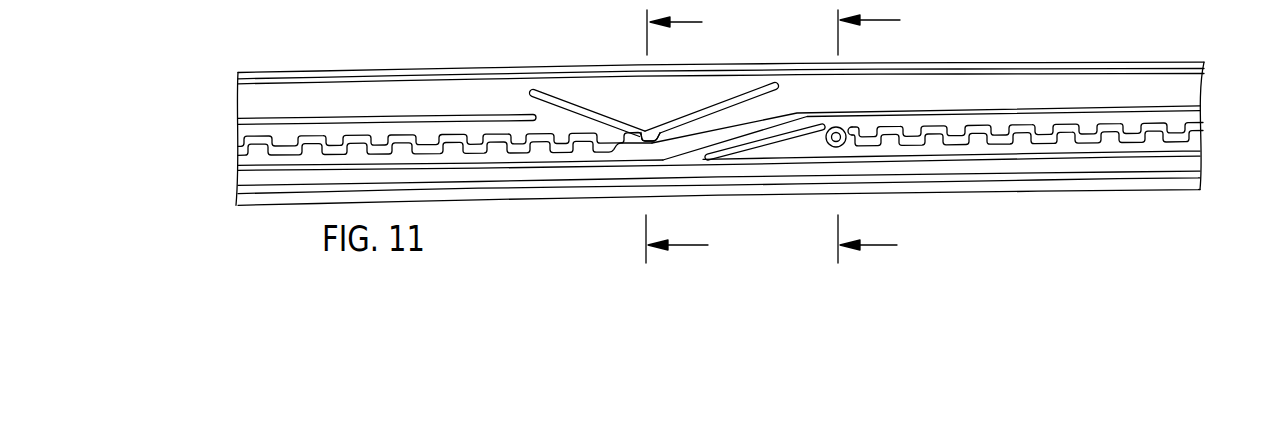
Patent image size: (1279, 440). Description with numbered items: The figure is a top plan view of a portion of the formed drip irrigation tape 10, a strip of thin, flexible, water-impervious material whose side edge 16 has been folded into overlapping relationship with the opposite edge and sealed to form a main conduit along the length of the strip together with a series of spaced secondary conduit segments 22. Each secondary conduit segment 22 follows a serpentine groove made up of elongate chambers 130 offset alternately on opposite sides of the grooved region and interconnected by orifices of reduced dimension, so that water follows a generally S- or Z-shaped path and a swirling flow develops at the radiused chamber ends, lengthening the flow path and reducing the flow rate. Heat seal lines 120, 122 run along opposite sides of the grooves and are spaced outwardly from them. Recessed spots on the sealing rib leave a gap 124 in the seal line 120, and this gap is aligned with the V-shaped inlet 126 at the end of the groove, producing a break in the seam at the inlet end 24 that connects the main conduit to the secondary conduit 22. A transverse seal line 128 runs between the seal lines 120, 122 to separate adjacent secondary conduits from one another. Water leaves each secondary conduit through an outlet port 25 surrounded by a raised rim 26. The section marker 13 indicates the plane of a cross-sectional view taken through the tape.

The drip irrigation tape 10 is at (1066, 58).
The section line 13 is at (695, 134).
The side edge 16 is at (1033, 173).
The secondary conduit segment 22 is at (487, 136).
The inlet end 24 is at (648, 137).
The outlet port 25 is at (839, 134).
The raised rim 26 is at (826, 131).
The heat seal line 120 is at (252, 117).
The heat seal line 122 is at (247, 171).
The gap 124 is at (543, 109).
The inlet 126 is at (587, 113).
The transverse seal line 128 is at (752, 139).
The elongate chamber 130 is at (403, 137).